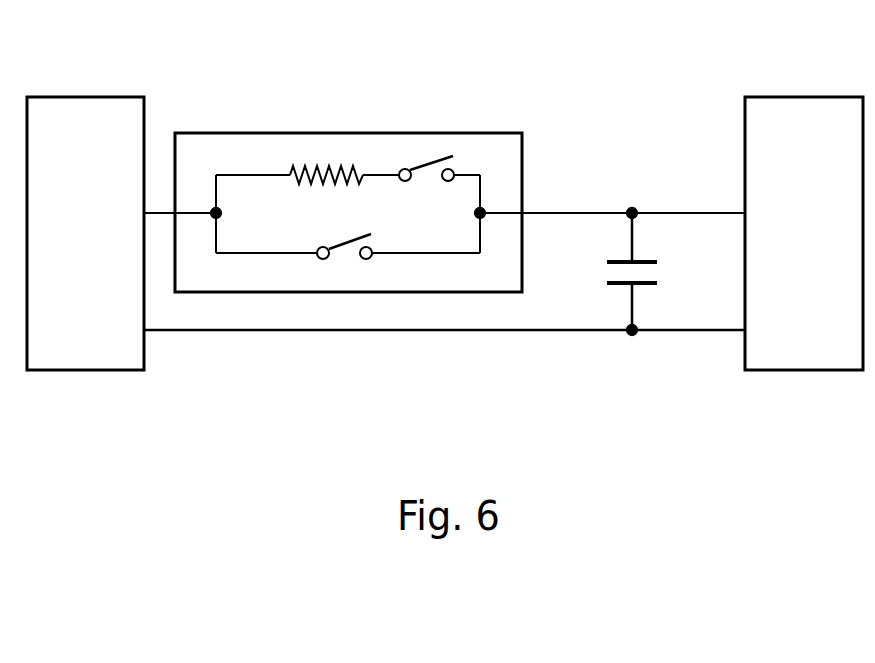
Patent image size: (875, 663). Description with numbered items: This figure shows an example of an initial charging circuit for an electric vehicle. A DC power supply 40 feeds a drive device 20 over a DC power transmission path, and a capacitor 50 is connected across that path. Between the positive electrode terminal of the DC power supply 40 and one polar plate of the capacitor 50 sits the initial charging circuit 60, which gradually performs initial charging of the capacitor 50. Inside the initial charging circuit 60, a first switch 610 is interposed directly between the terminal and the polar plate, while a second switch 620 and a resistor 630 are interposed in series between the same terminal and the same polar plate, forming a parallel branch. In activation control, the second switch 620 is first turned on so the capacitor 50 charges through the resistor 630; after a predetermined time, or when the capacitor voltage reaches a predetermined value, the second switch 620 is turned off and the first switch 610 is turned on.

The DC power supply 40 is at (83, 97).
The drive device 20 is at (803, 97).
The initial charging circuit 60 is at (352, 233).
The resistor 630 is at (322, 164).
The second switch 620 is at (425, 157).
The first switch 610 is at (350, 262).
The capacitor 50 is at (617, 290).